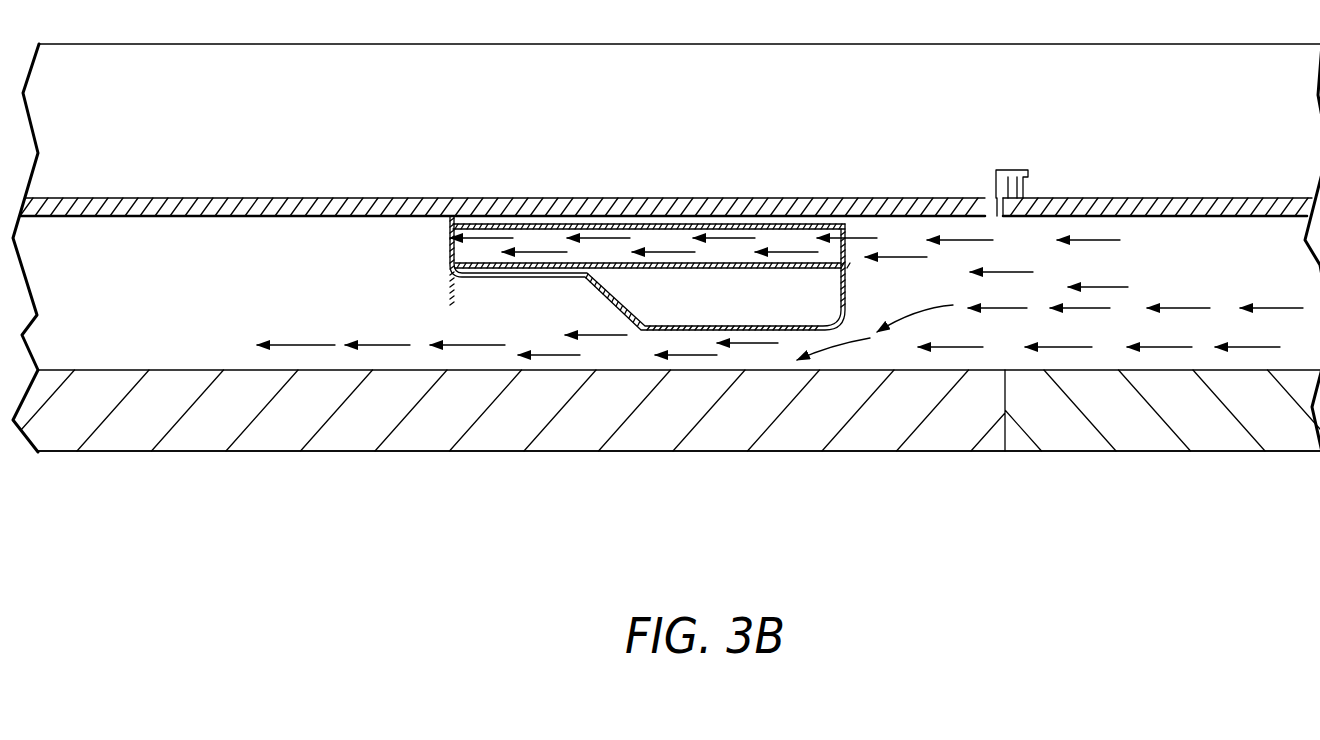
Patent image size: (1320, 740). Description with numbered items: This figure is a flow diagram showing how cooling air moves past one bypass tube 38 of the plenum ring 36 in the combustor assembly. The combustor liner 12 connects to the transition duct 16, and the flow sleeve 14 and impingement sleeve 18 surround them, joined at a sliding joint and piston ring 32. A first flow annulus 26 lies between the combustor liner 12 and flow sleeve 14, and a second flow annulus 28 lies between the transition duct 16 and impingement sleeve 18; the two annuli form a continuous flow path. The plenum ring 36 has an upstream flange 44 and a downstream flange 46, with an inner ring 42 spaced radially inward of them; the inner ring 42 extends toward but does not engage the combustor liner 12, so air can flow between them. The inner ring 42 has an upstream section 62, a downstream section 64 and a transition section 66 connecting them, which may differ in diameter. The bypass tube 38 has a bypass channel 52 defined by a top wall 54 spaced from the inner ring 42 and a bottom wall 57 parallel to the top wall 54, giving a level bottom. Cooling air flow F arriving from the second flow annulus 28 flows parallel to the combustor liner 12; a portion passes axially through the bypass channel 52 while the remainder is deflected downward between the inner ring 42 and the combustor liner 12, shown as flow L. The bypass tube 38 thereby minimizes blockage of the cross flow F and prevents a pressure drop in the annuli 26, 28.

The combustor liner 12 is at (278, 453).
The flow sleeve 14 is at (405, 197).
The transition duct 16 is at (1225, 453).
The impingement sleeve 18 is at (1140, 198).
The first flow annulus 26 is at (87, 292).
The second flow annulus 28 is at (1078, 330).
The sliding joint and piston ring 32 is at (1030, 172).
The plenum ring 36 is at (508, 287).
The bypass tube 38 is at (782, 237).
The inner ring 42 is at (642, 330).
The upstream flange 44 is at (850, 219).
The downstream flange 46 is at (450, 220).
The bypass channel 52 is at (542, 238).
The top wall 54 is at (672, 227).
The bottom wall 57 is at (843, 263).
The upstream section 62 is at (747, 333).
The downstream section 64 is at (480, 275).
The transition section 66 is at (612, 302).
The cooling air flow F is at (1093, 307).
The leakage flow L is at (376, 345).